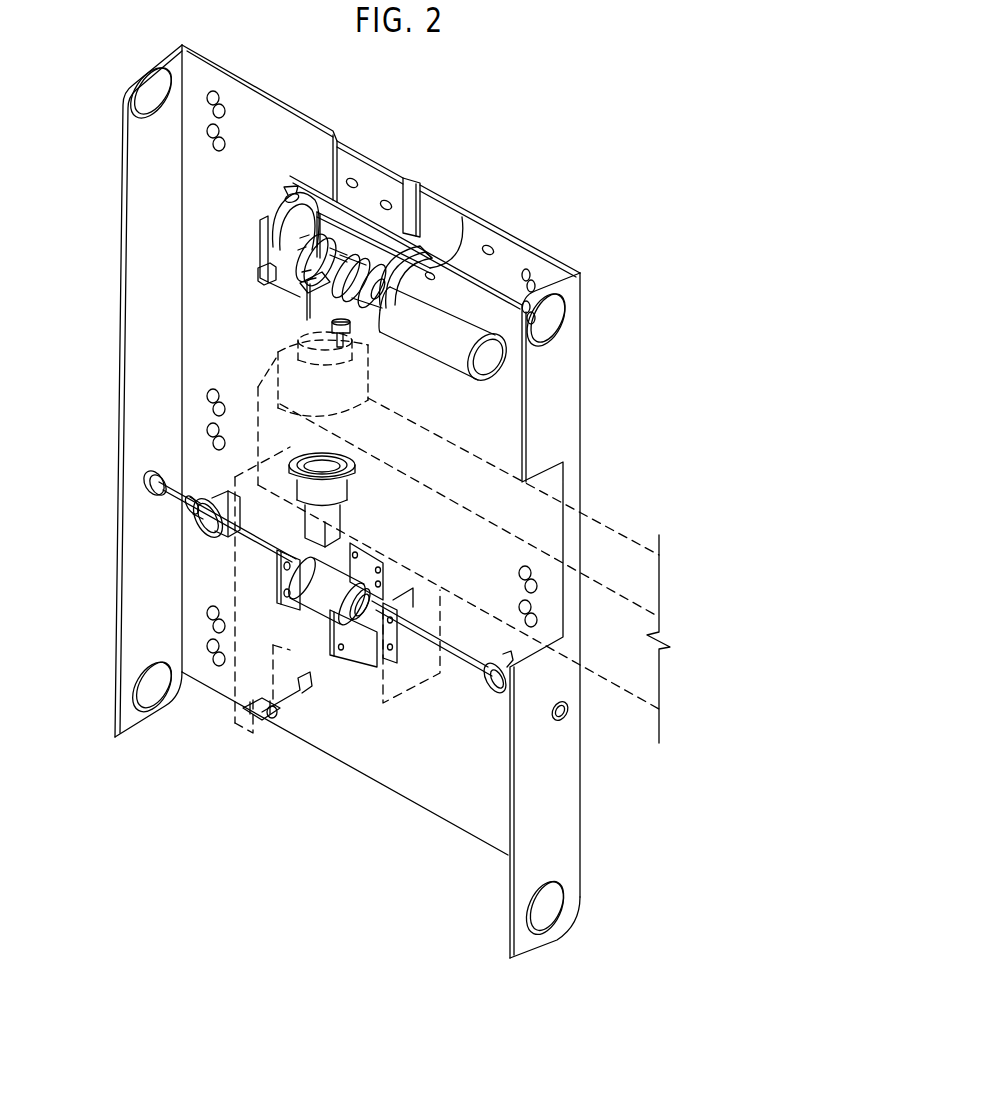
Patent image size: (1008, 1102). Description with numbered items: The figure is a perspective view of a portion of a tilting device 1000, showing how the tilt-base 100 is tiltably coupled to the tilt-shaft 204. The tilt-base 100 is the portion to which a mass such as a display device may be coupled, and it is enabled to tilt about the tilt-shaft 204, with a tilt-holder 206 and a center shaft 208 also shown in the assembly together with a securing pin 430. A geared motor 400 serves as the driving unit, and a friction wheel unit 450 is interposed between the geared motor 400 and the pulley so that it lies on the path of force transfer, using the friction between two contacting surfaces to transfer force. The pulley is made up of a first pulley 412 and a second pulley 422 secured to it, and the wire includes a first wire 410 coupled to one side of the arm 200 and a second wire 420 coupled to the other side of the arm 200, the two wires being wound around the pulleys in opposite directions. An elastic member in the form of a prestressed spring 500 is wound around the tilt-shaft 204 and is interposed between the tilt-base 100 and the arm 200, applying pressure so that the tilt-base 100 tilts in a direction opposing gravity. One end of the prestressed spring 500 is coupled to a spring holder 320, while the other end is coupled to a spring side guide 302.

The tilting device 1000 is at (633, 140).
The tilt-base 100 is at (573, 813).
The arm 200 is at (643, 575).
The tilt-shaft 204 is at (505, 690).
The tilt-holder 206 is at (200, 522).
The center shaft 208 is at (290, 462).
The spring side guide 302 is at (282, 580).
The spring holder 320 is at (323, 598).
The geared motor 400 is at (463, 323).
The first wire 410 is at (320, 340).
The first pulley 412 is at (405, 248).
The second wire 420 is at (300, 293).
The second pulley 422 is at (330, 243).
The securing pin 430 is at (263, 273).
The friction wheel unit 450 is at (430, 243).
The prestressed spring 500 is at (363, 650).